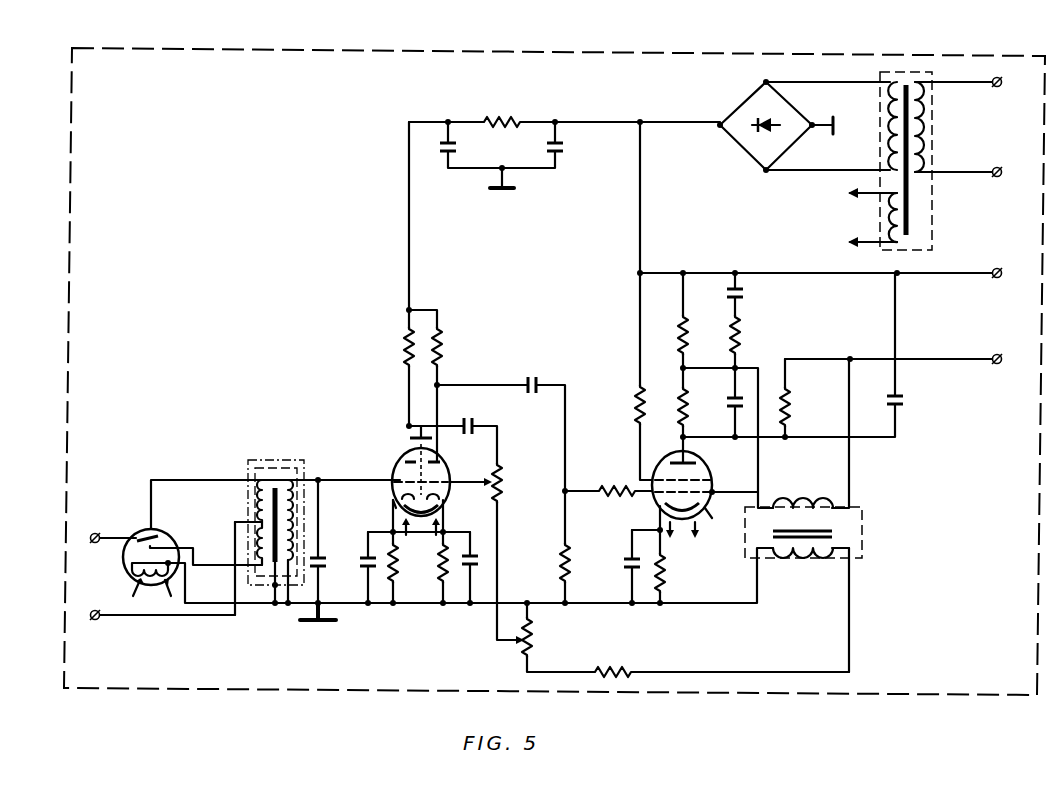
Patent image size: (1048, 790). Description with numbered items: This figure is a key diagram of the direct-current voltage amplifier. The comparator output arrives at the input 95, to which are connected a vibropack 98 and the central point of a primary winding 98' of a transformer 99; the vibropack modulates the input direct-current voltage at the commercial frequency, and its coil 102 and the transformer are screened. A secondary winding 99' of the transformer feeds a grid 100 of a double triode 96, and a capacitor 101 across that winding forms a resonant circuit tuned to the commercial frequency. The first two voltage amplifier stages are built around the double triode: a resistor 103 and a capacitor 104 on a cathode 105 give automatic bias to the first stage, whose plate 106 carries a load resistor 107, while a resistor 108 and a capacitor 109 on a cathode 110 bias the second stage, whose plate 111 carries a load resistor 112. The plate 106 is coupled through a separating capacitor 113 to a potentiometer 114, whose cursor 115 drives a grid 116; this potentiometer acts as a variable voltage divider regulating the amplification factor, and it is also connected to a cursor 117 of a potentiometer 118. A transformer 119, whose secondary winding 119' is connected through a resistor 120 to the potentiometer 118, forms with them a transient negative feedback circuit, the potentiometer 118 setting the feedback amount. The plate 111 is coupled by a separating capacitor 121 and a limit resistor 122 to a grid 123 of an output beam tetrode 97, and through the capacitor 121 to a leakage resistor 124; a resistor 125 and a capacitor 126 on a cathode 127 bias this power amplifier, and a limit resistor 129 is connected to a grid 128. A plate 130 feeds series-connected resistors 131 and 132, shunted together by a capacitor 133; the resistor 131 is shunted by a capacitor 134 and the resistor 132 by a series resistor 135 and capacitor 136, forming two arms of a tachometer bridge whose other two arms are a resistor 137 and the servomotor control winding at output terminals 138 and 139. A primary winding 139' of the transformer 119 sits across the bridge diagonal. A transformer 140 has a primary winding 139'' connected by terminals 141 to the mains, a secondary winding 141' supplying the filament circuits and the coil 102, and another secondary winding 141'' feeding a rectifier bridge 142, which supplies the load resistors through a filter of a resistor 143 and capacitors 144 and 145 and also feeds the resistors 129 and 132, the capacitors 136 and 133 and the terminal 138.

The input 95 is at (95, 608).
The double triode 96 is at (393, 464).
The output beam tetrode 97 is at (707, 462).
The vibropack 98 is at (158, 566).
The primary winding 98' is at (237, 522).
The transformer 99 is at (278, 501).
The secondary winding 99' is at (317, 520).
The grid 100 is at (394, 486).
The capacitor 101 is at (328, 566).
The coil 102 is at (132, 568).
The resistor 103 is at (398, 557).
The capacitor 104 is at (360, 562).
The cathode 105 is at (395, 504).
The plate 106 is at (409, 452).
The load resistor 107 is at (404, 345).
The resistor 108 is at (443, 574).
The capacitor 109 is at (478, 565).
The cathode 110 is at (442, 508).
The plate 111 is at (441, 462).
The load resistor 112 is at (443, 348).
The separating capacitor 113 is at (470, 418).
The potentiometer 114 is at (503, 472).
The cursor 115 is at (445, 481).
The grid 116 is at (442, 496).
The cursor 117 is at (518, 644).
The potentiometer 118 is at (533, 630).
The transformer 119 is at (825, 529).
The secondary winding 119' is at (803, 570).
The resistor 120 is at (612, 668).
The separating capacitor 121 is at (534, 378).
The limit resistor 122 is at (612, 487).
The grid 123 is at (706, 500).
The leakage resistor 124 is at (558, 555).
The resistor 125 is at (666, 570).
The capacitor 126 is at (624, 562).
The cathode 127 is at (660, 507).
The grid 128 is at (712, 480).
The limit resistor 129 is at (635, 402).
The plate 130 is at (680, 455).
The resistor 131 is at (678, 400).
The resistor 132 is at (678, 330).
The capacitor 133 is at (905, 402).
The capacitor 134 is at (727, 406).
The resistor 135 is at (730, 332).
The capacitor 136 is at (744, 296).
The resistor 137 is at (790, 400).
The output terminal 138 is at (995, 278).
The output terminal 139 is at (995, 345).
The primary winding 139' is at (803, 494).
The primary winding 139'' is at (944, 127).
The transformer 140 is at (933, 225).
The terminals 141 is at (1008, 127).
The secondary winding 141' is at (867, 217).
The secondary winding 141'' is at (869, 126).
The rectifier bridge 142 is at (745, 105).
The resistor 143 is at (508, 118).
The capacitor 144 is at (564, 152).
The capacitor 145 is at (457, 152).